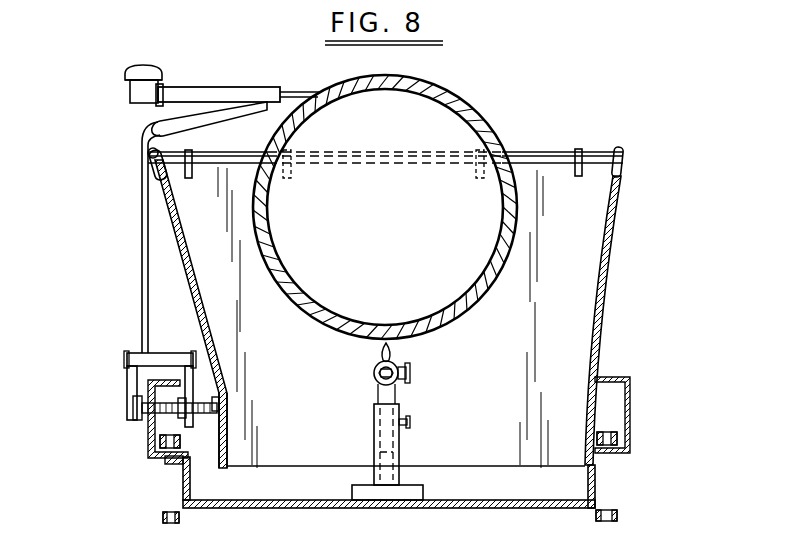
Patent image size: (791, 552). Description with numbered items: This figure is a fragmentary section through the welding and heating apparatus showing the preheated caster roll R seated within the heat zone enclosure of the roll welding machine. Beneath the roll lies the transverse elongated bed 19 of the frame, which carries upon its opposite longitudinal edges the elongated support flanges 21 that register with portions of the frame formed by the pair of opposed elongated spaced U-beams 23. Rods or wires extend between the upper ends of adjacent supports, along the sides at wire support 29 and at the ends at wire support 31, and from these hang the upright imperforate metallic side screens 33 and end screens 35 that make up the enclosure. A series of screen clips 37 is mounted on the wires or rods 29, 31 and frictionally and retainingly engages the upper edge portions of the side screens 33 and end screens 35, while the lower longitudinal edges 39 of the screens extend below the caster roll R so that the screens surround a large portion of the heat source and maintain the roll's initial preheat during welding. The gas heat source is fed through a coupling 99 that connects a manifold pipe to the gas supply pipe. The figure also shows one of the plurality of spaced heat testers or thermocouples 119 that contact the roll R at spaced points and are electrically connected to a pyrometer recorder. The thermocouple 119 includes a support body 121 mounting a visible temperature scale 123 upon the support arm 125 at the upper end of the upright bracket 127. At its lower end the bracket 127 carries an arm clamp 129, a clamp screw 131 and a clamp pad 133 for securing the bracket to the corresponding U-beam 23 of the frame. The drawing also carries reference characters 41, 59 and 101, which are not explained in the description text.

The caster roll R is at (438, 100).
The bed 19 is at (423, 507).
The support flange 21 is at (173, 466).
The U-beam 23 is at (148, 447).
The wire support 29 is at (150, 155).
The wire support 31 is at (238, 146).
The side screen 33 is at (210, 338).
The end screen 35 is at (527, 178).
The screen clip 37 is at (190, 178).
The lower longitudinal edge 39 is at (514, 467).
The wall lip 41 is at (228, 449).
The fastener 59 is at (161, 518).
The coupling 99 is at (411, 379).
The pointer 101 is at (381, 355).
The thermocouple 119 is at (306, 81).
The support body 121 is at (236, 86).
The temperature scale 123 is at (135, 68).
The support arm 125 is at (150, 122).
The upright bracket 127 is at (142, 271).
The arm clamp 129 is at (127, 382).
The clamp screw 131 is at (202, 395).
The clamp pad 133 is at (214, 420).